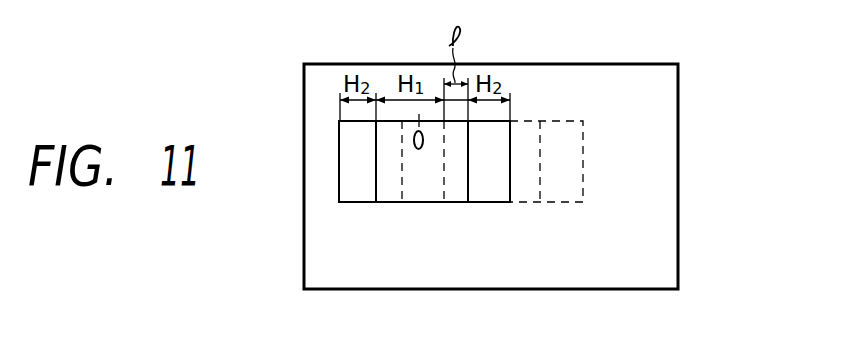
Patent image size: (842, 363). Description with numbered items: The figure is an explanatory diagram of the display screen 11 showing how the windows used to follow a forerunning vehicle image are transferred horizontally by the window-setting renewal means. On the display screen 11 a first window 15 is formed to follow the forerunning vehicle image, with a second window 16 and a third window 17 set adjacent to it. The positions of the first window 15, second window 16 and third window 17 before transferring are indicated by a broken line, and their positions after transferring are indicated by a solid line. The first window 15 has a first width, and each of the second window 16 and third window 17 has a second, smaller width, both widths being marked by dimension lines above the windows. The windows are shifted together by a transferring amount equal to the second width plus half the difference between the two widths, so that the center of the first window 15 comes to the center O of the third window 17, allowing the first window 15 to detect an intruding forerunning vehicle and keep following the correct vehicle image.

The display screen 11 is at (678, 121).
The first window 15 is at (420, 192).
The second window 16 is at (494, 192).
The third window 17 is at (360, 193).